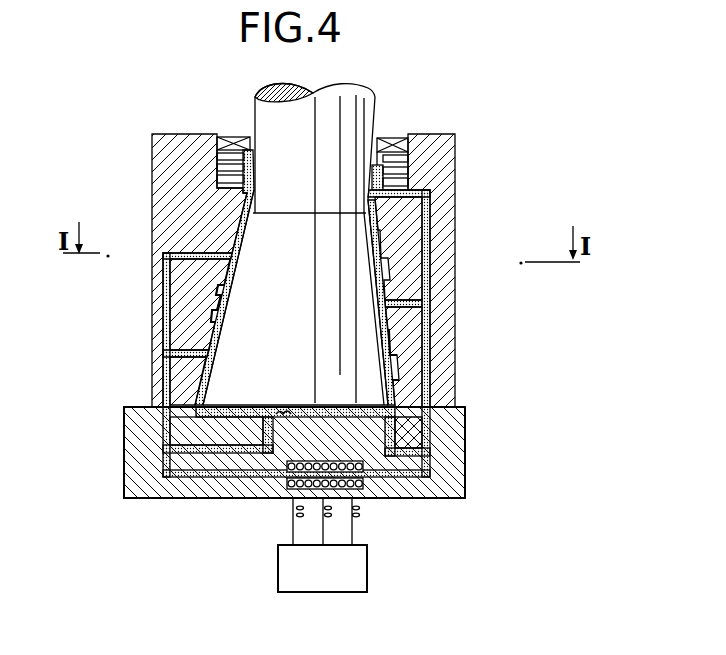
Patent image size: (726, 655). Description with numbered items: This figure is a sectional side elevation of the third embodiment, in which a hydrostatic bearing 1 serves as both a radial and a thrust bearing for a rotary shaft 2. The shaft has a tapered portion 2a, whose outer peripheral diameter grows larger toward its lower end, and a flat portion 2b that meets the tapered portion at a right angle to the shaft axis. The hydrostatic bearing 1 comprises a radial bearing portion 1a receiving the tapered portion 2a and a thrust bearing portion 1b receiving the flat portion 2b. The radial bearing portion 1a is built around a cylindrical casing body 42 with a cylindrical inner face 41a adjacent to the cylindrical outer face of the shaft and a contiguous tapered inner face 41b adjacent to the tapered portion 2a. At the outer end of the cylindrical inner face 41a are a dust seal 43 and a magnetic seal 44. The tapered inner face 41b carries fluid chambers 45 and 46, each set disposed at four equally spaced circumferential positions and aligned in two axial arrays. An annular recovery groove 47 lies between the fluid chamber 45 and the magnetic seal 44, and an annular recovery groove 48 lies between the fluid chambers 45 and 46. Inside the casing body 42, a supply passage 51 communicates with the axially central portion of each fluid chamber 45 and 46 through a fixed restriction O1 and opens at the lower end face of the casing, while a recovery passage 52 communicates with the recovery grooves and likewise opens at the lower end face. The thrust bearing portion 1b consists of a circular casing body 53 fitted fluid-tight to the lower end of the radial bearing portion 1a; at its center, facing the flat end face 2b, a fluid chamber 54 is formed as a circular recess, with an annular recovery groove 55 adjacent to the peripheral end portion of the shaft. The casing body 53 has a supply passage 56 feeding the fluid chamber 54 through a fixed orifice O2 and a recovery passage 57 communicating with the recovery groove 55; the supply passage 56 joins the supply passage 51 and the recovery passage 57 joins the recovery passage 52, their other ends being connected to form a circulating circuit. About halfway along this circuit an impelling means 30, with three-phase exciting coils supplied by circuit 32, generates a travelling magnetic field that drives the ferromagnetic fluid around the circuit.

The hydrostatic bearing 1 is at (484, 130).
The radial bearing portion 1a is at (450, 170).
The thrust bearing portion 1b is at (460, 435).
The rotary shaft 2 is at (349, 104).
The tapered portion 2a is at (421, 238).
The flat portion 2b is at (260, 420).
The impelling means 30 is at (287, 497).
The circuit 32 is at (370, 568).
The cylindrical inner face 41a is at (397, 142).
The tapered inner face 41b is at (392, 393).
The cylindrical casing body 42 is at (447, 215).
The dust seal 43 is at (233, 137).
The magnetic seal 44 is at (388, 175).
The fluid chamber 45 is at (394, 272).
The fluid chamber 46 is at (398, 362).
The annular recovery groove 47 is at (233, 200).
The annular recovery groove 48 is at (221, 312).
The supply passage 51 is at (185, 322).
The recovery passage 52 is at (425, 303).
The circular casing body 53 is at (455, 480).
The fluid chamber 54 is at (287, 418).
The annular recovery groove 55 is at (213, 443).
The supply passage 56 is at (248, 404).
The recovery passage 57 is at (395, 478).
The fixed restriction O1 is at (212, 236).
The fixed orifice O2 is at (280, 411).